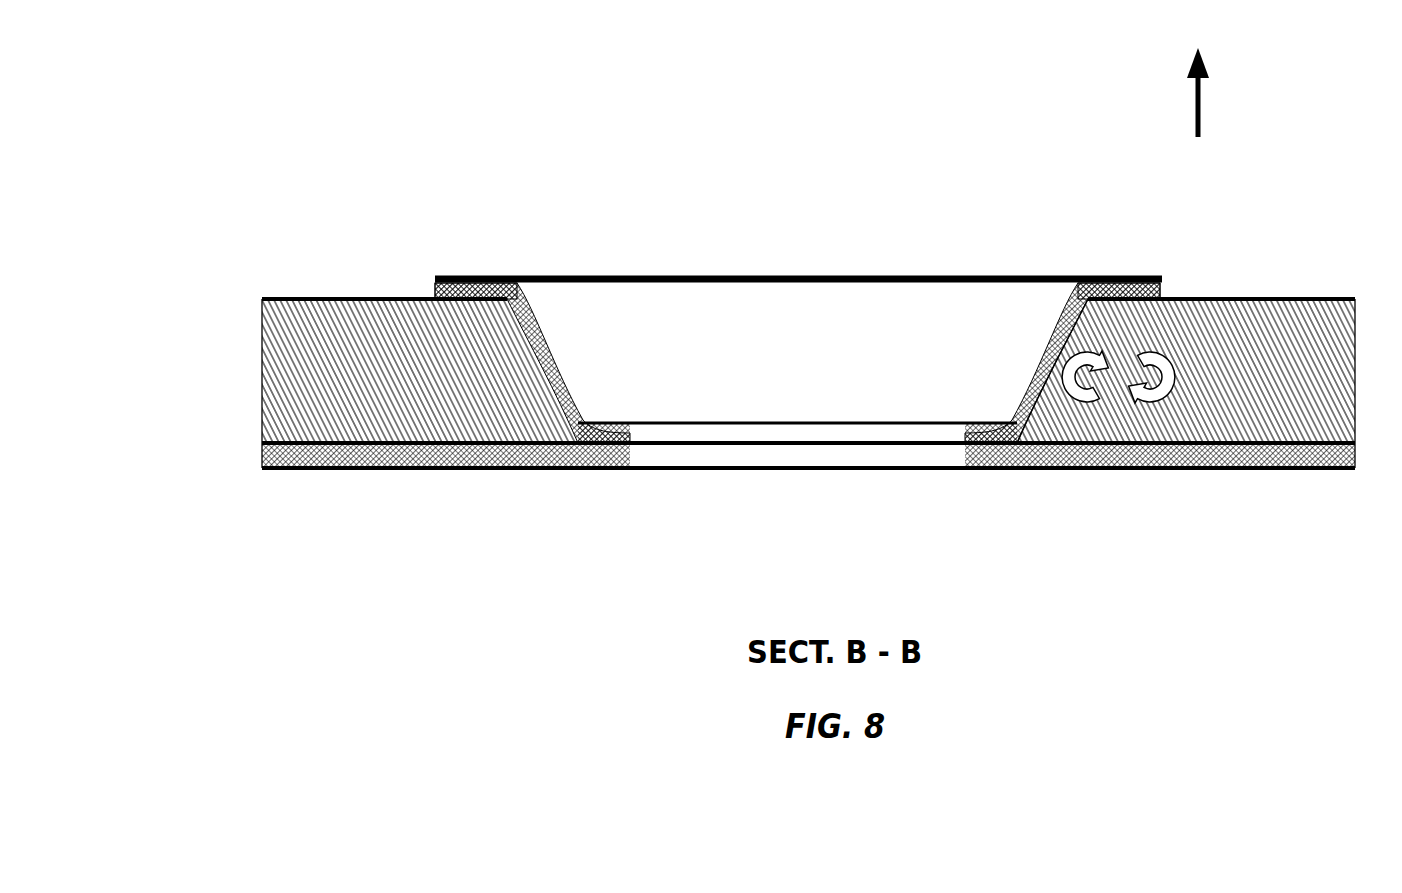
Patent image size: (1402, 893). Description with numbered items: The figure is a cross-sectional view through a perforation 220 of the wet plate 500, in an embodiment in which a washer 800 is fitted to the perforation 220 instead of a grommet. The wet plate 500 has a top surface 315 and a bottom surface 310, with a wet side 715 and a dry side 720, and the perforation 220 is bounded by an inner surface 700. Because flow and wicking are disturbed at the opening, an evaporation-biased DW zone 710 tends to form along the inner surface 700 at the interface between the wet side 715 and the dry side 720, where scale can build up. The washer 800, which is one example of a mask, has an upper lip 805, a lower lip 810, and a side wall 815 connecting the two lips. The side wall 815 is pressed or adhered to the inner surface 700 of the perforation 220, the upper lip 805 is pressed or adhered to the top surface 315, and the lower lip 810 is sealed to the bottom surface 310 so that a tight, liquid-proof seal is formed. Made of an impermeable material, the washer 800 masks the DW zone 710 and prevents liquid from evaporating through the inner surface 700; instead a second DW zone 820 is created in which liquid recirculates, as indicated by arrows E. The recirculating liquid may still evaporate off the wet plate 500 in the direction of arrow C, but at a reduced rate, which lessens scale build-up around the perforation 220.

The wet plate 500 is at (733, 354).
The perforation 220 is at (830, 267).
The second DW zone 820 is at (430, 293).
The washer 800 is at (555, 342).
The side wall 815 is at (1057, 352).
The upper lip 805 is at (1132, 290).
The wet side 715 is at (1337, 273).
The top surface 315 is at (302, 357).
The DW zone 710 is at (547, 428).
The bottom surface 310 is at (386, 470).
The lower lip 810 is at (986, 406).
The inner surface 700 is at (1048, 403).
The dry side 720 is at (1263, 500).
The arrows E is at (1148, 337).
The arrow C is at (1217, 92).